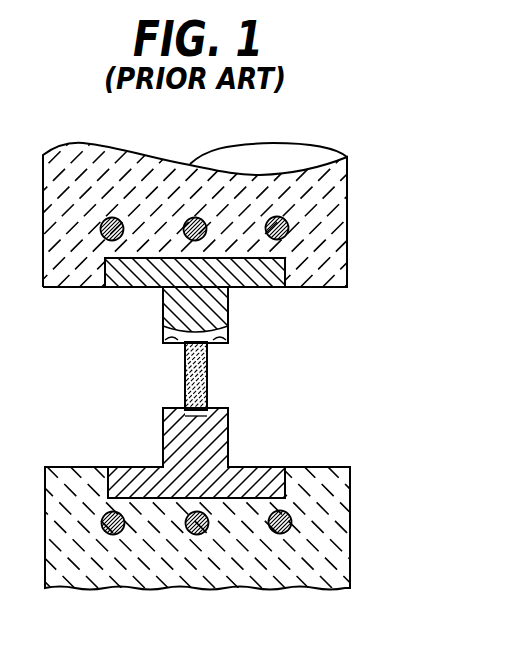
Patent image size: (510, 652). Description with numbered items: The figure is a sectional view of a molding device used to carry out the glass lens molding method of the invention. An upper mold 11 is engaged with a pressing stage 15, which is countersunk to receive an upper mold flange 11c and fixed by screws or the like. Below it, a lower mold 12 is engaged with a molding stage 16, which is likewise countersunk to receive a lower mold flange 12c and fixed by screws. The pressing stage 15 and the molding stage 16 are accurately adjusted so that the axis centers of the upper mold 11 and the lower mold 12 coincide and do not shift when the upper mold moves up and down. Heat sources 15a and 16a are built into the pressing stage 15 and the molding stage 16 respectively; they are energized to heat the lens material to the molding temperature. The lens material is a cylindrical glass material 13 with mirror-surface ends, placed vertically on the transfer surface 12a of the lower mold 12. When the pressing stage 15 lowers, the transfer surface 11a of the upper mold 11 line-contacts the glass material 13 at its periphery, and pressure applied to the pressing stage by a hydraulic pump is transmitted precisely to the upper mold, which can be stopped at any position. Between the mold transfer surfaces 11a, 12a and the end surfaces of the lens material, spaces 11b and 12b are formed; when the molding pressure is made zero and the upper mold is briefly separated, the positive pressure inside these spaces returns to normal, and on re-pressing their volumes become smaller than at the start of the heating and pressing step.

The upper mold 11 is at (250, 289).
The transfer surface of the upper mold 11a is at (175, 330).
The space 11b is at (228, 347).
The upper mold flange 11c is at (285, 270).
The lower mold 12 is at (172, 452).
The transfer surface of the lower mold 12a is at (216, 428).
The space 12b is at (167, 412).
The lower mold flange 12c is at (278, 480).
The glass material 13 is at (205, 375).
The pressing stage 15 is at (347, 210).
The heat source 15a is at (206, 216).
The molding stage 16 is at (332, 572).
The heat source 16a is at (198, 535).